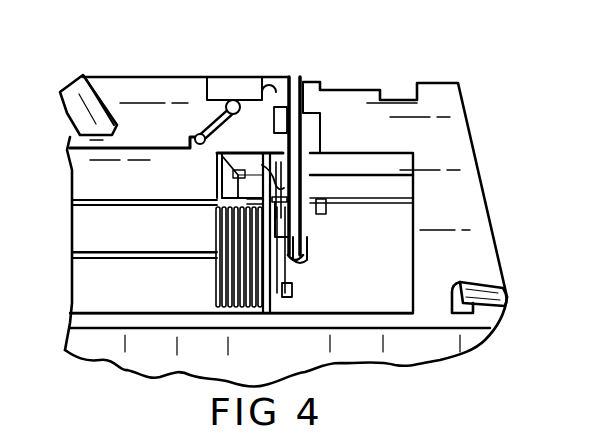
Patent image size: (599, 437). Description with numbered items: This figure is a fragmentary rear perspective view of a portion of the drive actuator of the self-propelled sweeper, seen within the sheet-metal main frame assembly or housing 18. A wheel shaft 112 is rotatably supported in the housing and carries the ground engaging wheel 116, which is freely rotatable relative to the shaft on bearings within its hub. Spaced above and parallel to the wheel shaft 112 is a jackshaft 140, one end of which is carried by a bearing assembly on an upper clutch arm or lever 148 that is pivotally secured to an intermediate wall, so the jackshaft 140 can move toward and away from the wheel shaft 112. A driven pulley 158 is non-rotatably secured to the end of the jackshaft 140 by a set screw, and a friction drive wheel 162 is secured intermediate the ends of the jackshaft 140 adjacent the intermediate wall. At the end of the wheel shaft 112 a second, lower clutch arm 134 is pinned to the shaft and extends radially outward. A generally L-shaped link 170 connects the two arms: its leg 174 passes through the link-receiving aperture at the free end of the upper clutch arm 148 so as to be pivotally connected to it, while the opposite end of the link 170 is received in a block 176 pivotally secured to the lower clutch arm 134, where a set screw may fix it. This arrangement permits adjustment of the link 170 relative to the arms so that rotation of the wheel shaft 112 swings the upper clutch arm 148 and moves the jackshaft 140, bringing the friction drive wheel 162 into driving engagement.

The main frame assembly or housing 18 is at (147, 97).
The wheel shaft 112 is at (112, 260).
The ground engaging wheel 116 is at (237, 307).
The second lower clutch arm 134 is at (276, 300).
The jackshaft 140 is at (150, 200).
The upper clutch arm 148 is at (283, 178).
The driven pulley 158 is at (310, 188).
The friction drive wheel 162 is at (262, 188).
The link 170 is at (288, 252).
The leg 174 is at (283, 223).
The block 176 is at (293, 288).